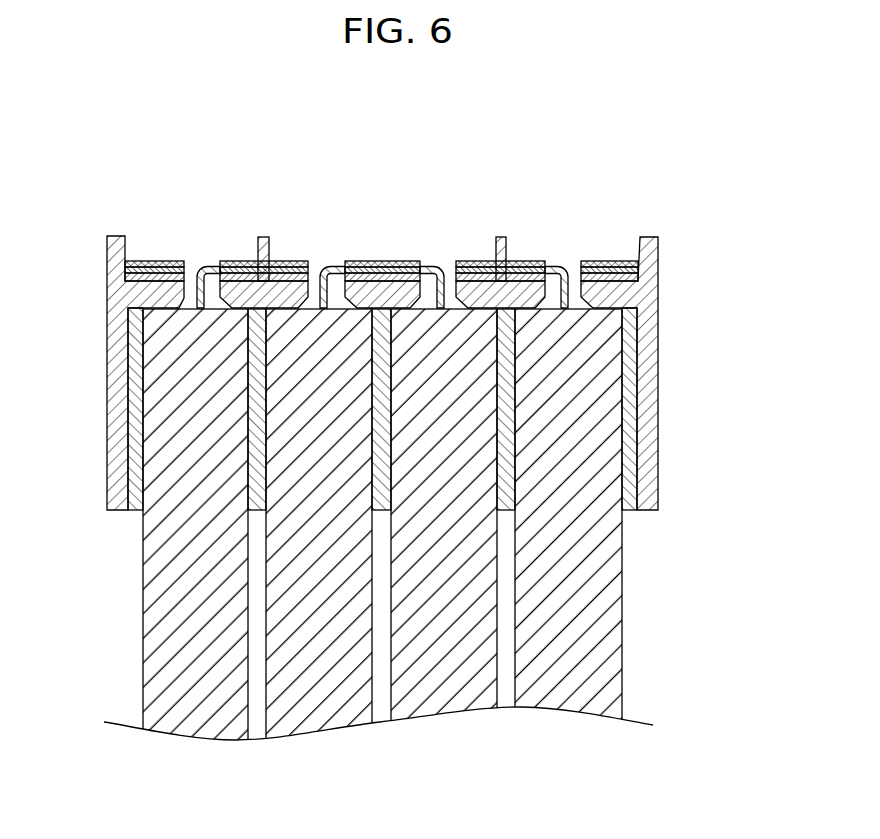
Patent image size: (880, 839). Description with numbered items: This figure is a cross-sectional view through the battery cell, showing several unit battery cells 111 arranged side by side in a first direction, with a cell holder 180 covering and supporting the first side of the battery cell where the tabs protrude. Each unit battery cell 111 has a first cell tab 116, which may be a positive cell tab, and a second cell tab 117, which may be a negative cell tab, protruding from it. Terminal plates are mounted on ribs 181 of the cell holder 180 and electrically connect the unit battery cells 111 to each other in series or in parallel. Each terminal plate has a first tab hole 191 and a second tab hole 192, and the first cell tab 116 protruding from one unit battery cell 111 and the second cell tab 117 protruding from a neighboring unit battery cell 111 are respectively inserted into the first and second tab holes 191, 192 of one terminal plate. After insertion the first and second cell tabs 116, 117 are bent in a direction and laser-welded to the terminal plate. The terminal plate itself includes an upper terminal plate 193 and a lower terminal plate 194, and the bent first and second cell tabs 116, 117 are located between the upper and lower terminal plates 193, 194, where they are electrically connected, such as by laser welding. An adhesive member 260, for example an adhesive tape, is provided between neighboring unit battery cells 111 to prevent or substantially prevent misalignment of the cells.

The unit battery cell 111 is at (190, 724).
The first cell tab 116 is at (334, 268).
The second cell tab 117 is at (212, 268).
The cell holder 180 is at (669, 282).
The rib 181 is at (287, 277).
The first tab hole 191 is at (315, 270).
The second tab hole 192 is at (193, 270).
The upper terminal plate 193 is at (375, 261).
The lower terminal plate 194 is at (394, 262).
The adhesive member 260 is at (134, 418).